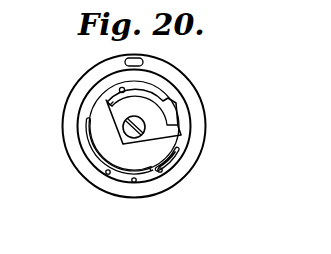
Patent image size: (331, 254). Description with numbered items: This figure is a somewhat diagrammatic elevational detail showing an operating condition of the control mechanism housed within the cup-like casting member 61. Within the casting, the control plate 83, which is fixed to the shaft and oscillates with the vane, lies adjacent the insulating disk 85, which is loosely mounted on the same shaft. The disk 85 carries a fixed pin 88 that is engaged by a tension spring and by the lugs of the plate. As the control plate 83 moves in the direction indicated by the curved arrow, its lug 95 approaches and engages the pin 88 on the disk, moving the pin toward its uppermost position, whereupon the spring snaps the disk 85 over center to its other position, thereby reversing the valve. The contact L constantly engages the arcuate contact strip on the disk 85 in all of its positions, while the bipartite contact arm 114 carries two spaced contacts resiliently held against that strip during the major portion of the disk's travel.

The casting member 61 is at (196, 97).
The control plate 83 is at (151, 112).
The insulating disk 85 is at (144, 128).
The pin 88 is at (119, 89).
The lug 95 is at (108, 103).
The contact arm 114 is at (185, 164).
The contact L is at (89, 140).